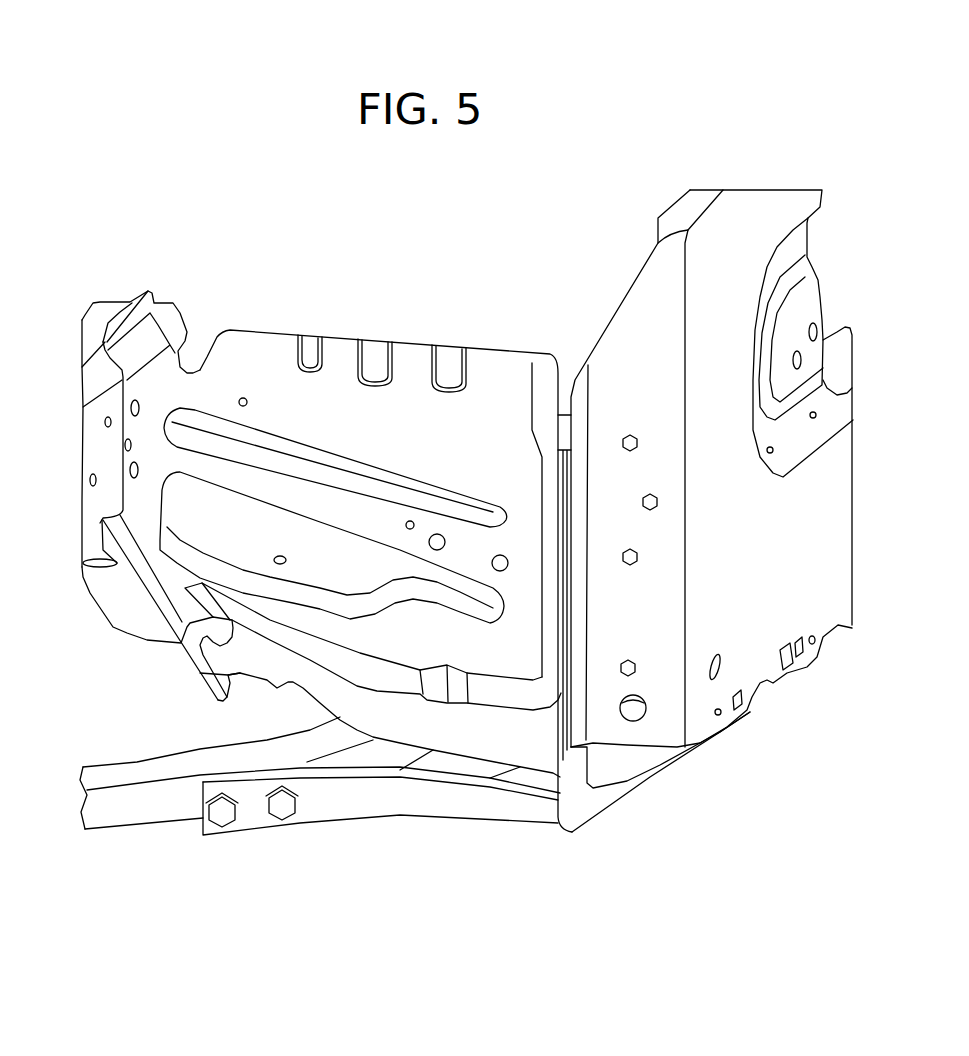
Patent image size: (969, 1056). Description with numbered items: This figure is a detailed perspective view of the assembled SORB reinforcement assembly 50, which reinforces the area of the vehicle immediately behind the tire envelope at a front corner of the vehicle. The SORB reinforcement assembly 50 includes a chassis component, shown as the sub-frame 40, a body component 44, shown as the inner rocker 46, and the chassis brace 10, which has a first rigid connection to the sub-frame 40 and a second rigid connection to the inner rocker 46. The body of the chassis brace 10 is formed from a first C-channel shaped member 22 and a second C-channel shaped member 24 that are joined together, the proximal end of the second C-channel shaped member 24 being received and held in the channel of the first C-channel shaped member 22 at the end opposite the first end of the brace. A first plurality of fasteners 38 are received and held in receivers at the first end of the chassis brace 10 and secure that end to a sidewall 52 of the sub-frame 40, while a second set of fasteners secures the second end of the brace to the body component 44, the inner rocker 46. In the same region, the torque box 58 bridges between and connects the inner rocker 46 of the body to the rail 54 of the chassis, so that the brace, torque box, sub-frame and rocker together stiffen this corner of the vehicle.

The chassis brace 10 is at (293, 898).
The SORB reinforcement assembly 50 is at (220, 227).
The rail 54 is at (82, 403).
The torque box 58 is at (403, 343).
The sub-frame 40 is at (137, 767).
The sidewall 52 is at (148, 805).
The first C-channel shaped member 22 is at (383, 800).
The second C-channel shaped member 24 is at (533, 775).
The first plurality of fasteners 38 is at (280, 812).
The body component 44 is at (734, 489).
The inner rocker 46 is at (753, 668).